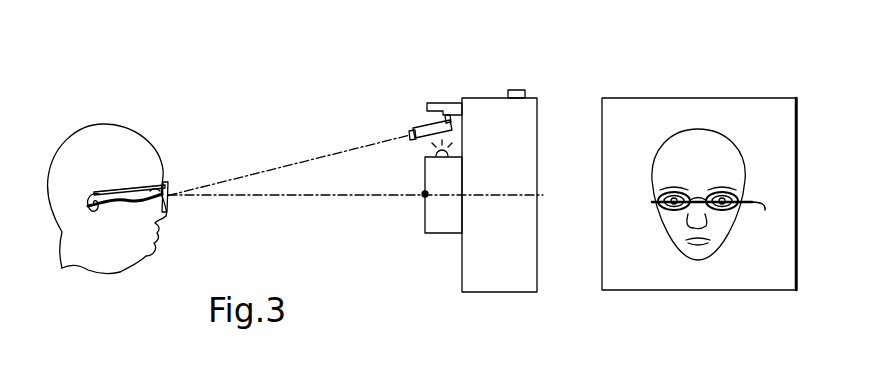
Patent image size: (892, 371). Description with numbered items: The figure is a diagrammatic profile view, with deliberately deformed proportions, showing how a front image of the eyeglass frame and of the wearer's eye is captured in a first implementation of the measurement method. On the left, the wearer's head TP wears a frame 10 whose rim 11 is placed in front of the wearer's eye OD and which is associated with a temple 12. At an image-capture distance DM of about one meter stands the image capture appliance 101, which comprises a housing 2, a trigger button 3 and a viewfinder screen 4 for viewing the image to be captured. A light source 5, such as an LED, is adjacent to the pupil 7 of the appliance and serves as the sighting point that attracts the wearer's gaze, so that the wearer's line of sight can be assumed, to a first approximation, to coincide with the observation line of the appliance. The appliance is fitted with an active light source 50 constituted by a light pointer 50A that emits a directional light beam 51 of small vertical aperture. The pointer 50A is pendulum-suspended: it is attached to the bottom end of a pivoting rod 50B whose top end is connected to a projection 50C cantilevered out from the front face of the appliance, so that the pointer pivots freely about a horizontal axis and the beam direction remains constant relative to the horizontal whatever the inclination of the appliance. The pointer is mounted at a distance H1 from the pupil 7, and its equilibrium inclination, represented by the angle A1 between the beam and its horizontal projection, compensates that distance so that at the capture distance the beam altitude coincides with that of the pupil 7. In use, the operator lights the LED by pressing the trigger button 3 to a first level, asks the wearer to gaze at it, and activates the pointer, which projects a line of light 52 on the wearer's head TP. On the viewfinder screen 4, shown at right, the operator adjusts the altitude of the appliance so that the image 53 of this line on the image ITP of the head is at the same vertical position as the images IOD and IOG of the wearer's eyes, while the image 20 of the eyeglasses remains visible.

The wearer's head TP is at (103, 123).
The wearer's eye OD is at (150, 186).
The frame 10 is at (185, 178).
The rim 11 is at (170, 183).
The temple 12 is at (128, 187).
The line of light 52 is at (124, 206).
The directional light beam 51 is at (288, 165).
The angle of inclination of light pointer A1 is at (318, 159).
The image-capture distance DM is at (423, 25).
The active light source 50 is at (404, 91).
The light pointer 50A is at (415, 110).
The pivoting rod 50B is at (471, 106).
The projection 50C is at (432, 103).
The light source 5 is at (437, 160).
The pupil of the image capture appliance 7 is at (424, 198).
The housing 2 is at (538, 104).
The trigger button 3 is at (518, 90).
The distance between pupil and light pointer H1 is at (480, 132).
The image capture appliance 101 is at (543, 272).
The viewfinder screen 4 is at (690, 291).
The image of the wearer's head ITP is at (674, 128).
The image of the wearer's right eye IOD is at (670, 192).
The image of the wearer's left eye IOG is at (727, 192).
The image of the eyeglasses 20 is at (658, 203).
The image of the line of light 53 is at (758, 205).